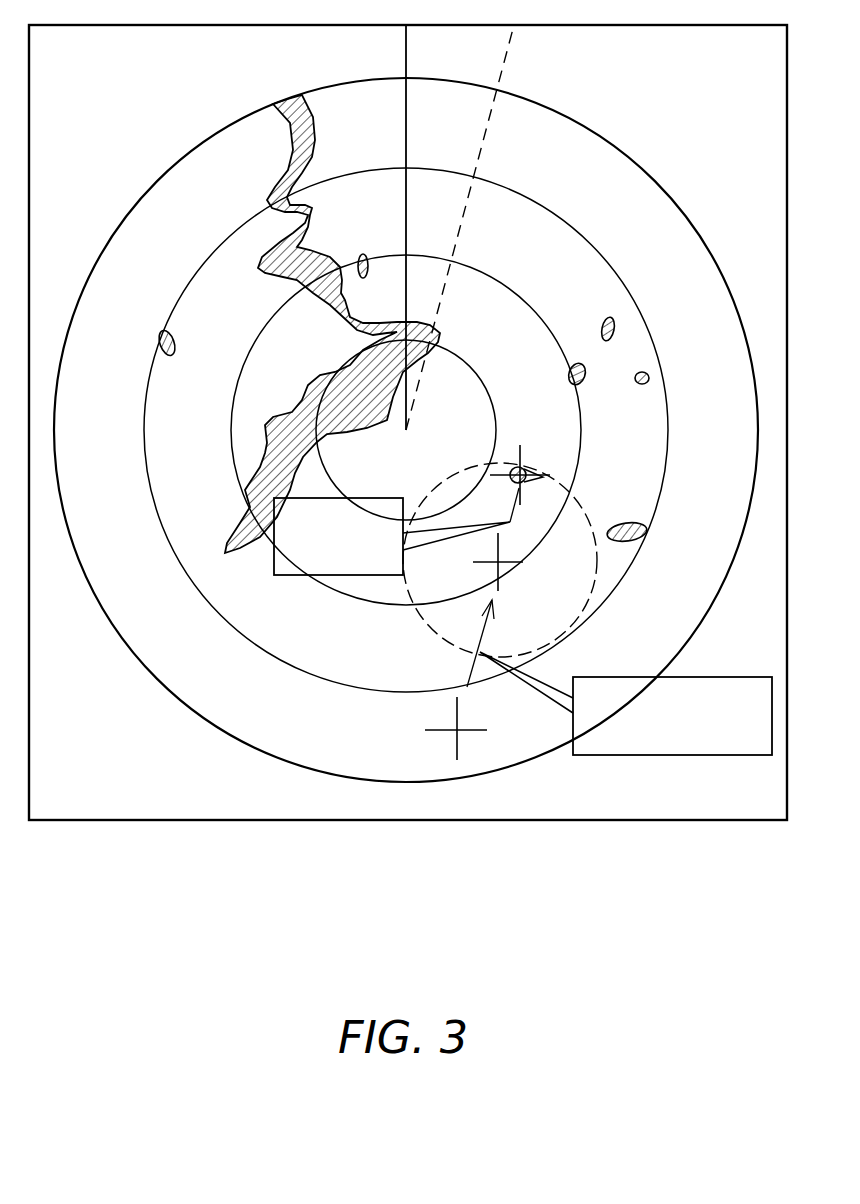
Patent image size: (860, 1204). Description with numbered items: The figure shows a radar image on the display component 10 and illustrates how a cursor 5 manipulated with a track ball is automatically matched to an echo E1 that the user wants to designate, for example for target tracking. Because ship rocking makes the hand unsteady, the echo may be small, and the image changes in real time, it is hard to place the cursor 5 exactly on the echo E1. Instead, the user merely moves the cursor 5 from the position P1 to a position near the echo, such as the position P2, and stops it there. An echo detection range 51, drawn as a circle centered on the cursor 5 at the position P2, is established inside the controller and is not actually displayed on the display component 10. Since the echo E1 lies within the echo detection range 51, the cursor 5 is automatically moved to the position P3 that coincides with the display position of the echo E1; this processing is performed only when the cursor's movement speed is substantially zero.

The display component 10 is at (268, 860).
The echo detection range 51 is at (577, 503).
The cursor 5 is at (478, 572).
The echo E1 is at (530, 468).
The position P1 is at (450, 734).
The position P2 is at (528, 584).
The position P3 is at (507, 480).